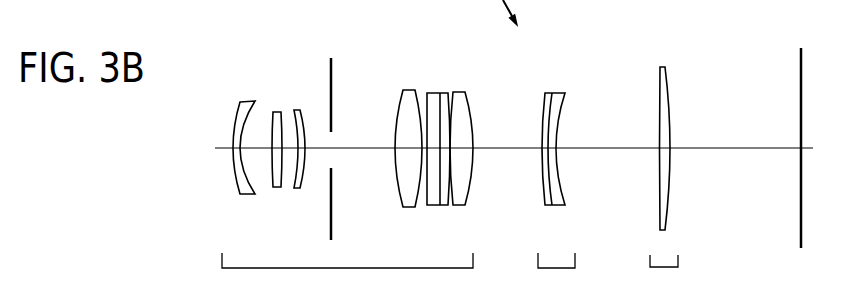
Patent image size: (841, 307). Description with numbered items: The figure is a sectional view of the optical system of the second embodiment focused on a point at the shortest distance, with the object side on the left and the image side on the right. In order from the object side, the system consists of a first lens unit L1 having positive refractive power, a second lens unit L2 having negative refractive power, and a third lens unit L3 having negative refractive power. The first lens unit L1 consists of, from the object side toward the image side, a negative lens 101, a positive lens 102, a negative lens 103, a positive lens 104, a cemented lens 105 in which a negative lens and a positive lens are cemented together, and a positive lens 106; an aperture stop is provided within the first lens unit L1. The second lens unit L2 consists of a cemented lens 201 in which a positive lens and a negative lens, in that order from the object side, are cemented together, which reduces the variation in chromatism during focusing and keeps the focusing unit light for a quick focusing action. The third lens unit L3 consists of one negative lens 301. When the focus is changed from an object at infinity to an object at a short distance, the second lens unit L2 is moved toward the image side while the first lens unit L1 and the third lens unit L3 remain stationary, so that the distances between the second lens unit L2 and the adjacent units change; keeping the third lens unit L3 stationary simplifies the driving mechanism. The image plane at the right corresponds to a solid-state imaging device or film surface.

The negative lens 101 is at (252, 102).
The positive lens 102 is at (278, 112).
The negative lens 103 is at (296, 110).
The positive lens 104 is at (411, 90).
The cemented lens 105 is at (450, 86).
The positive lens 106 is at (456, 90).
The cemented lens 201 is at (570, 87).
The negative lens 301 is at (665, 67).
The first lens unit L1 is at (336, 158).
The second lens unit L2 is at (556, 177).
The third lens unit L3 is at (663, 157).